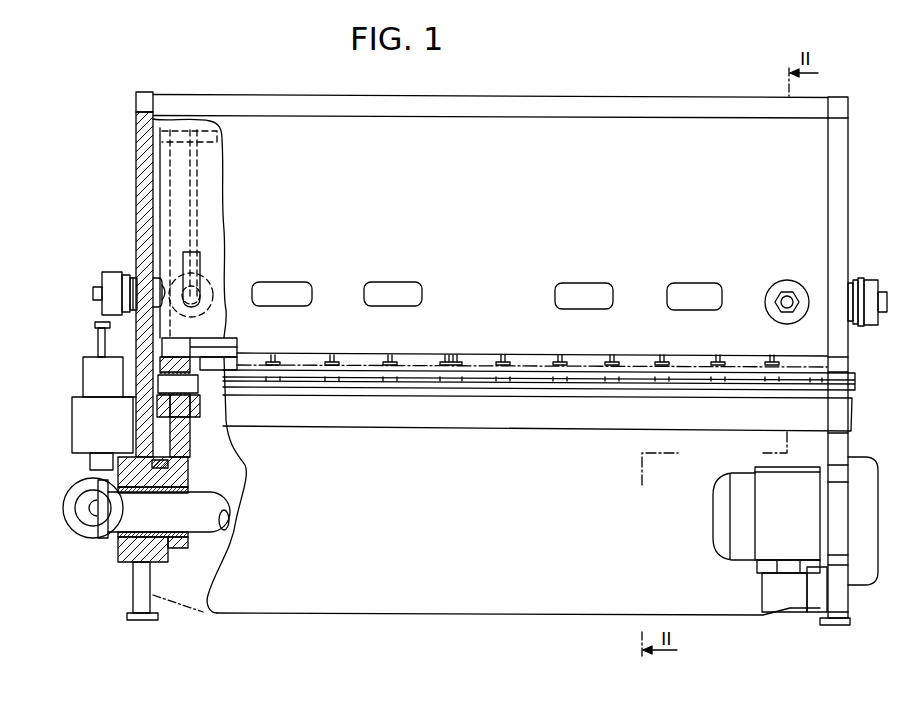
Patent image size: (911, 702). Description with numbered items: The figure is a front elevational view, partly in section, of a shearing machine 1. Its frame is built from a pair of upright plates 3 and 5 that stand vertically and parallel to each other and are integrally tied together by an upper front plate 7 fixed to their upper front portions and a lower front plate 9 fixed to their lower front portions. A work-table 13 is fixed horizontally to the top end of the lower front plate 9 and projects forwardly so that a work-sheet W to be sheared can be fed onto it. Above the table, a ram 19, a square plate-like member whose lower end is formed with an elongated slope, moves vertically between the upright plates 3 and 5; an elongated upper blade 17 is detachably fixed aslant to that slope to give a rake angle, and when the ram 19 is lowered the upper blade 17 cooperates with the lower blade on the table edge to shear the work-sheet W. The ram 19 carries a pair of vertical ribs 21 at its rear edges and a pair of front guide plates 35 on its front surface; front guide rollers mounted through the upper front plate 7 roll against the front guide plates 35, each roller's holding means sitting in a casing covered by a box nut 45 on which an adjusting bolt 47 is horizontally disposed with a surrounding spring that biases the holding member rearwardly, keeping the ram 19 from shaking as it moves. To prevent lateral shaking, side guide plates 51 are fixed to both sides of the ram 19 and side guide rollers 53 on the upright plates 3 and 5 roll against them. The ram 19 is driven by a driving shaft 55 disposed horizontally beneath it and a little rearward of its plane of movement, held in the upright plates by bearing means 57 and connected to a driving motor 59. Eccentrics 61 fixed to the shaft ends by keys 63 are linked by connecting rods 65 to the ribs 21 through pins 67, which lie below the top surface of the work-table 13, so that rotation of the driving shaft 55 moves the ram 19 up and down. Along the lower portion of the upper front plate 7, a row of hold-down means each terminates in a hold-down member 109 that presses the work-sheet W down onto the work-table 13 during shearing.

The shearing machine 1 is at (588, 86).
The upright plate 3 is at (849, 143).
The upright plate 5 is at (140, 150).
The upper front plate 7 is at (503, 165).
The lower front plate 9 is at (545, 616).
The work-table 13 is at (500, 428).
The upper blade 17 is at (226, 345).
The ram 19 is at (212, 195).
The vertical rib 21 is at (203, 167).
The front guide plate 35 is at (200, 252).
The box nut 45 is at (768, 291).
The adjusting bolt 47 is at (790, 290).
The side guide plate 51 is at (148, 268).
The side guide roller 53 is at (159, 282).
The driving shaft 55 is at (170, 540).
The bearing means 57 is at (150, 565).
The driving motor 59 is at (800, 529).
The eccentric 61 is at (190, 468).
The key 63 is at (212, 522).
The connecting rod 65 is at (190, 440).
The pin 67 is at (196, 385).
The hold-down member 109 is at (470, 356).
The work-sheet W is at (521, 357).